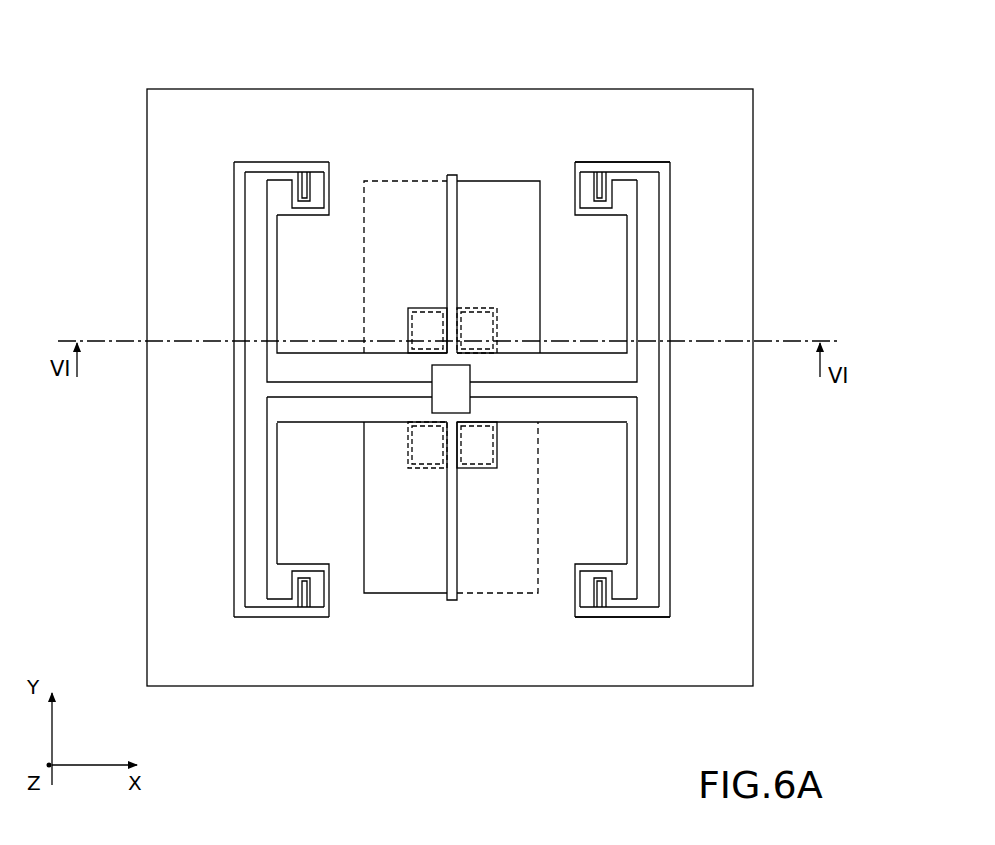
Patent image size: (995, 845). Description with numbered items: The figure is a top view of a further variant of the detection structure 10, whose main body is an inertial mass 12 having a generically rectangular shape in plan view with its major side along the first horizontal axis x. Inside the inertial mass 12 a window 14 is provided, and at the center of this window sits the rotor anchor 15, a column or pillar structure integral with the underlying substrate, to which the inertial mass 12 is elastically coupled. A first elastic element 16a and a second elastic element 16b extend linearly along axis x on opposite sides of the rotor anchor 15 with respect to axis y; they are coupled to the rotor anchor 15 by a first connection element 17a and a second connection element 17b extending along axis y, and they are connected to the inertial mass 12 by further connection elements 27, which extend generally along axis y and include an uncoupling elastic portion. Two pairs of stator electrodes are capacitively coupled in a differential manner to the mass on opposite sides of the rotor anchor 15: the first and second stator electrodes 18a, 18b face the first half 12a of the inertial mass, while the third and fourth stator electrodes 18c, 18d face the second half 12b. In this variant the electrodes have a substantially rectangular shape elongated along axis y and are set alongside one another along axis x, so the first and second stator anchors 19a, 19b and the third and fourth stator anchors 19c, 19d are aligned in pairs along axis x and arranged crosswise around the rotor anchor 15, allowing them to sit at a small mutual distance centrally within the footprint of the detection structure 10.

The detection structure 10 is at (779, 170).
The inertial mass 12 is at (756, 308).
The first half of the inertial mass 12a is at (345, 190).
The second half of the inertial mass 12b is at (345, 565).
The window 14 is at (660, 203).
The rotor anchor 15 is at (458, 378).
The first elastic element 16a is at (250, 283).
The second elastic element 16b is at (655, 283).
The first connection element 17a is at (312, 388).
The second connection element 17b is at (575, 390).
The first stator electrode 18a is at (482, 200).
The second stator electrode 18b is at (402, 198).
The third stator electrode 18c is at (402, 573).
The fourth stator electrode 18d is at (493, 574).
The first stator anchor 19a is at (475, 322).
The second stator anchor 19b is at (427, 330).
The third stator anchor 19c is at (413, 447).
The fourth stator anchor 19d is at (470, 447).
The further connection element 27 is at (304, 180).